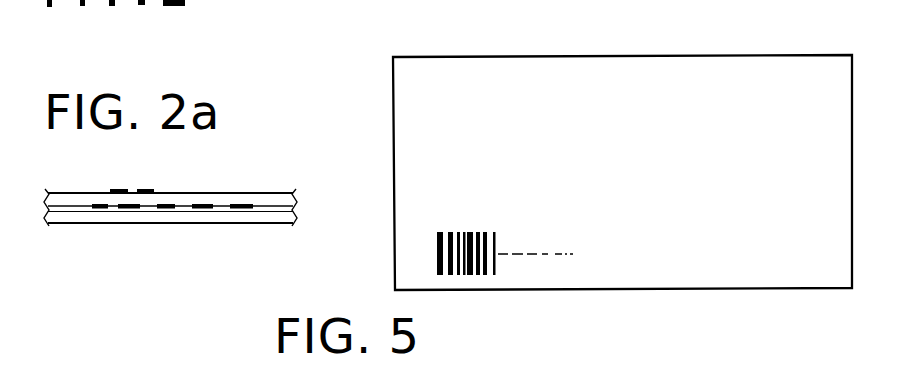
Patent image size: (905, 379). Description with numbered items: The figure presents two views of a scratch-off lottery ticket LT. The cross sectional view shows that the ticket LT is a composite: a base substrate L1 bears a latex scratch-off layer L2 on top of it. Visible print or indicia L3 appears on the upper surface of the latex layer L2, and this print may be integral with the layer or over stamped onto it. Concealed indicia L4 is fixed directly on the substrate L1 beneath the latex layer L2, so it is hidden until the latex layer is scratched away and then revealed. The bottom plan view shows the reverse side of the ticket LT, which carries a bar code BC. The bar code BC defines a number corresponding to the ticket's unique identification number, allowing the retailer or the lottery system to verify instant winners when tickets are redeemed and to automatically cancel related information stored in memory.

In FIG. 2A, the base substrate L1 is at (160, 219).
In FIG. 2A, the latex scratch-off layer L2 is at (222, 203).
In FIG. 2A, the visible print or indicia L3 is at (131, 191).
In FIG. 2A, the concealed indicia L4 is at (102, 209).
In FIG. 5, the lottery ticket LT is at (390, 138).
In FIG. 5, the bar code BC is at (462, 279).